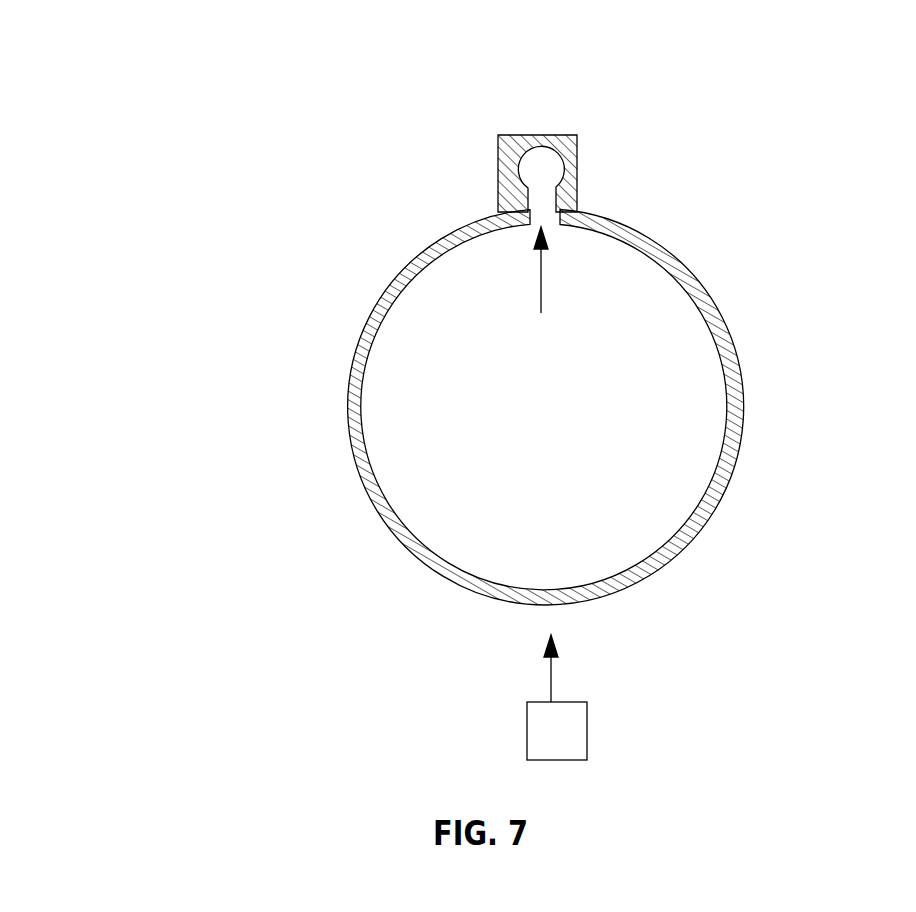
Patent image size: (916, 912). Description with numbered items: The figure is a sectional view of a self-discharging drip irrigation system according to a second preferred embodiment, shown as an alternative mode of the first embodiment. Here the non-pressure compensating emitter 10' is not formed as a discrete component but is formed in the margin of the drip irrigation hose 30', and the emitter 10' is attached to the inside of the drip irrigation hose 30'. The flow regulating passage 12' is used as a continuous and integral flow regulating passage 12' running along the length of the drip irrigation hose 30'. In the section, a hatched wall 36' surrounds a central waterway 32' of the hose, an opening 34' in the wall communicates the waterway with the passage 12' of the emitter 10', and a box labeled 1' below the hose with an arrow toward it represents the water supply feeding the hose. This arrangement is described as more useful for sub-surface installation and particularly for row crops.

The non-pressure compensating emitter 10' is at (501, 306).
The drip irrigation hose 30' is at (501, 378).
The shaft wall 36' is at (423, 401).
The lumen 32' is at (396, 299).
The flow regulating passage 12' is at (411, 131).
The passage 34' is at (404, 164).
The fluid source 1' is at (440, 697).